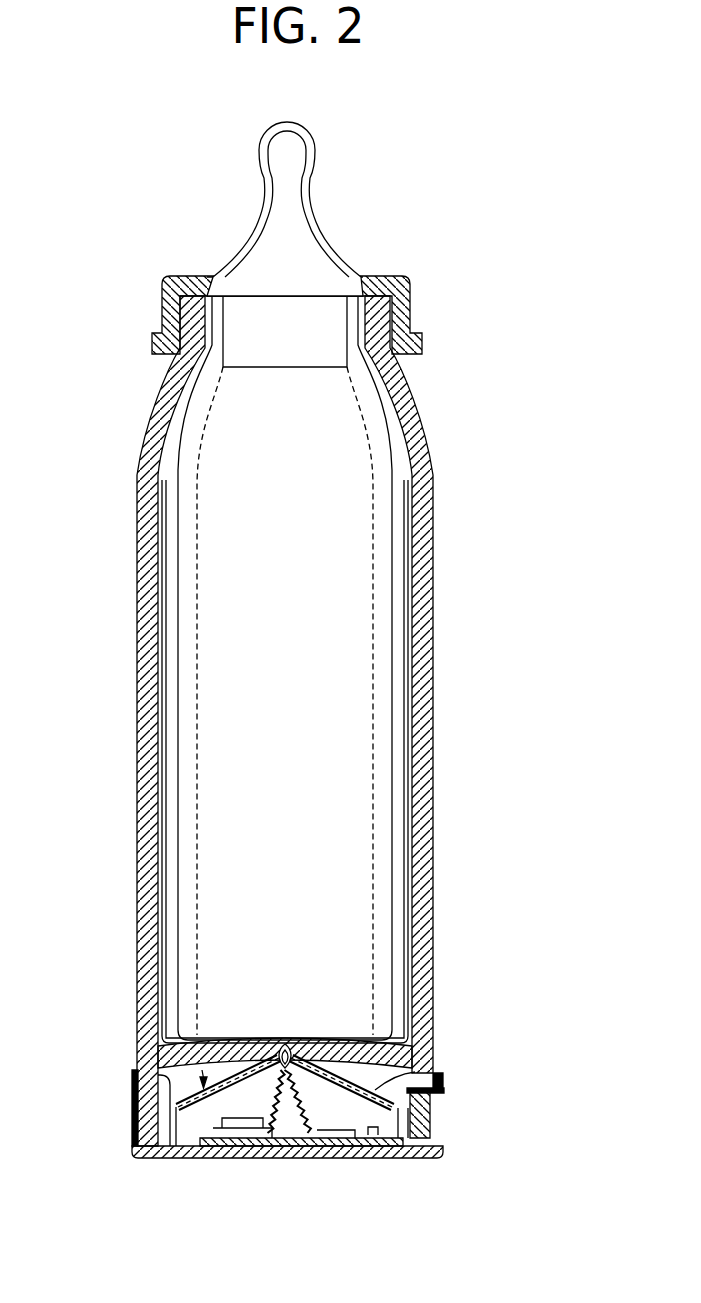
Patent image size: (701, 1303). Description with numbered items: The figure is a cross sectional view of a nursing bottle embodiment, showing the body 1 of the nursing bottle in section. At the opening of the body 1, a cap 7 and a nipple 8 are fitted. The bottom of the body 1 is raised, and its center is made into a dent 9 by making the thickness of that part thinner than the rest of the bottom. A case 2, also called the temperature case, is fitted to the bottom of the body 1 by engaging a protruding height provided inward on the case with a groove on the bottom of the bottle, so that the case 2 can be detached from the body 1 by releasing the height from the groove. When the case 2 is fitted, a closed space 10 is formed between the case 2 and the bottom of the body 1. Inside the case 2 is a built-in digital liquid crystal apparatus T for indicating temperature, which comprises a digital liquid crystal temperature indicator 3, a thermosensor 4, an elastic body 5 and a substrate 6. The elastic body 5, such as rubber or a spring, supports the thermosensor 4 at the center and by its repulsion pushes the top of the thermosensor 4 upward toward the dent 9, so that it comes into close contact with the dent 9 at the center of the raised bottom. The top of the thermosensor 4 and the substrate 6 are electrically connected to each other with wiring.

The body of the nursing bottle 1 is at (148, 613).
The case 2 is at (178, 1090).
The digital liquid crystal temperature indicator 3 is at (432, 1118).
The thermosensor 4 is at (290, 1056).
The elastic body 5 is at (430, 1075).
The substrate 6 is at (278, 1160).
The cap 7 is at (408, 317).
The nipple 8 is at (313, 178).
The dent 9 is at (290, 1045).
The closed space 10 is at (135, 1123).
The digital liquid crystal apparatus T is at (178, 1040).